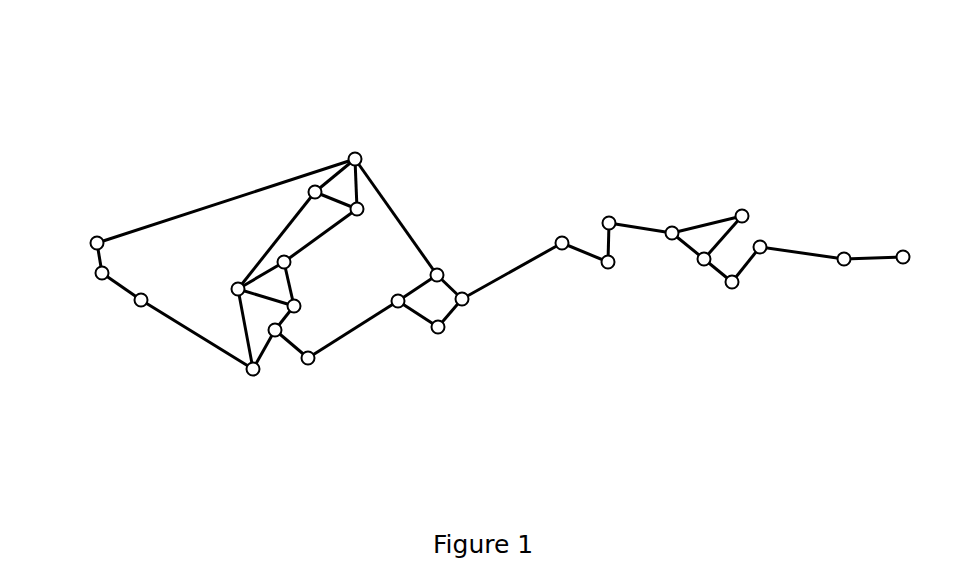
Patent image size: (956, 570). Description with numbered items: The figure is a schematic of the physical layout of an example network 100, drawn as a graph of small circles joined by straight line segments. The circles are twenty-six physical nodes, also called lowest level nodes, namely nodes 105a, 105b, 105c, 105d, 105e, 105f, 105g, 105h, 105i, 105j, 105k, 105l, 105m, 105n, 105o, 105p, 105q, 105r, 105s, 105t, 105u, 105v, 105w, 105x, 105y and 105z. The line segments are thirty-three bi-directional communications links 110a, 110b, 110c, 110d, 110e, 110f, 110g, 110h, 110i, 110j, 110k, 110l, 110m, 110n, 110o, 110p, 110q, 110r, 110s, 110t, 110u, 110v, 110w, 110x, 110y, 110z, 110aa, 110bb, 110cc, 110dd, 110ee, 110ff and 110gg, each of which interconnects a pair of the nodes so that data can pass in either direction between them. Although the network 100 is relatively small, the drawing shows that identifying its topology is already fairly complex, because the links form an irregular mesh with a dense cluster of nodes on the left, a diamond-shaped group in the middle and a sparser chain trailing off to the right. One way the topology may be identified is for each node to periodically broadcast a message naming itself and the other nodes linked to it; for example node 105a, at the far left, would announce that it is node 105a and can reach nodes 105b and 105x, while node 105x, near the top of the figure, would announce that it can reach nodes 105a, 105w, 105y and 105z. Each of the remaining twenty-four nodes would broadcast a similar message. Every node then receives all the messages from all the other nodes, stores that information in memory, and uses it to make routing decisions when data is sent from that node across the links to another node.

The network 100 is at (242, 432).
The physical node 105a is at (98, 237).
The physical node 105b is at (103, 282).
The physical node 105c is at (143, 307).
The physical node 105d is at (257, 378).
The physical node 105e is at (232, 290).
The physical node 105f is at (284, 250).
The physical node 105g is at (300, 302).
The physical node 105h is at (276, 337).
The physical node 105i is at (310, 362).
The physical node 105j is at (400, 307).
The physical node 105k is at (440, 332).
The physical node 105l is at (465, 305).
The physical node 105m is at (560, 235).
The physical node 105n is at (610, 270).
The physical node 105o is at (608, 215).
The physical node 105p is at (672, 226).
The physical node 105q is at (705, 267).
The physical node 105r is at (742, 208).
The physical node 105s is at (732, 290).
The physical node 105t is at (765, 242).
The physical node 105u is at (843, 251).
The physical node 105v is at (905, 265).
The physical node 105w is at (438, 267).
The physical node 105x is at (355, 151).
The physical node 105y is at (364, 202).
The physical node 105z is at (314, 184).
The bi-directional communications link 110a is at (93, 255).
The bi-directional communications link 110b is at (120, 280).
The bi-directional communications link 110c is at (202, 340).
The bi-directional communications link 110d is at (240, 327).
The bi-directional communications link 110e is at (258, 287).
The bi-directional communications link 110f is at (265, 260).
The bi-directional communications link 110g is at (288, 275).
The bi-directional communications link 110h is at (285, 320).
The bi-directional communications link 110i is at (262, 350).
The bi-directional communications link 110j is at (293, 348).
The bi-directional communications link 110k is at (343, 340).
The bi-directional communications link 110l is at (417, 317).
The bi-directional communications link 110m is at (400, 274).
The bi-directional communications link 110n is at (448, 320).
The bi-directional communications link 110o is at (502, 273).
The bi-directional communications link 110p is at (587, 250).
The bi-directional communications link 110q is at (650, 227).
The bi-directional communications link 110r is at (728, 215).
The bi-directional communications link 110s is at (690, 253).
The bi-directional communications link 110t is at (725, 240).
The bi-directional communications link 110u is at (716, 277).
The bi-directional communications link 110v is at (747, 277).
The bi-directional communications link 110w is at (776, 258).
The bi-directional communications link 110x is at (868, 257).
The bi-directional communications link 110y is at (340, 218).
The bi-directional communications link 110z is at (612, 247).
The bi-directional communications link 110aa is at (337, 197).
The bi-directional communications link 110bb is at (343, 160).
The bi-directional communications link 110cc is at (362, 180).
The bi-directional communications link 110dd is at (465, 278).
The bi-directional communications link 110ee is at (290, 252).
The bi-directional communications link 110ff is at (440, 238).
The bi-directional communications link 110gg is at (130, 218).